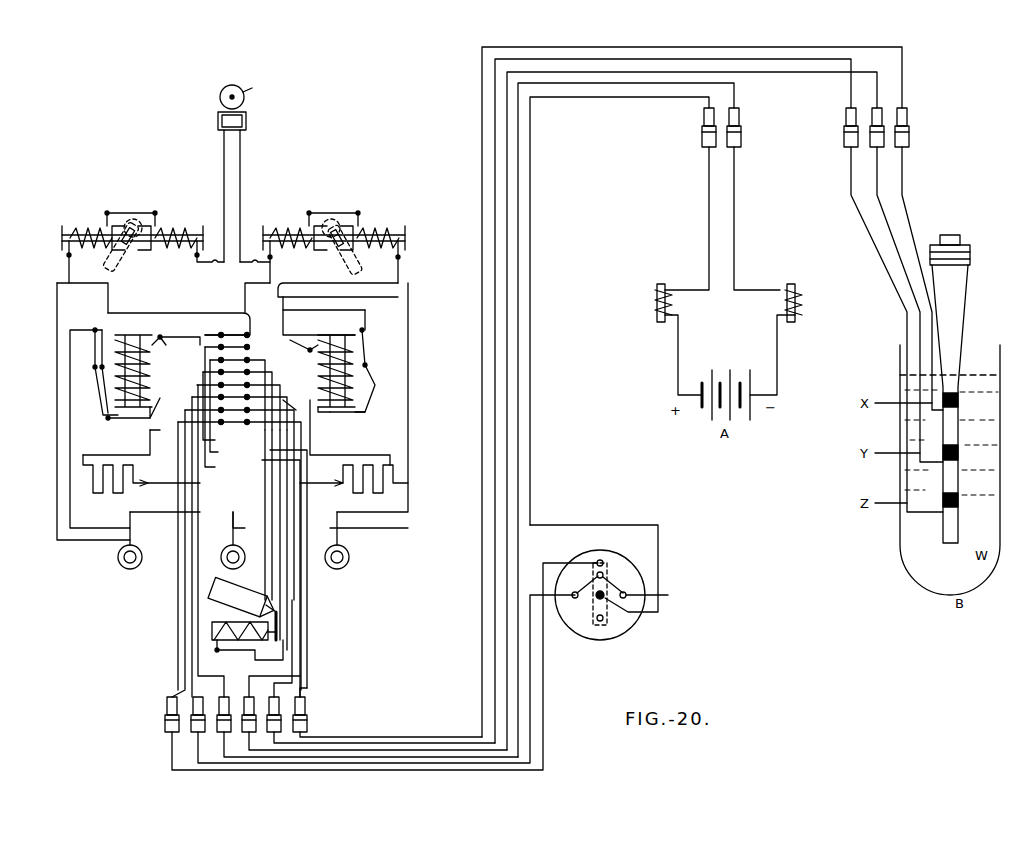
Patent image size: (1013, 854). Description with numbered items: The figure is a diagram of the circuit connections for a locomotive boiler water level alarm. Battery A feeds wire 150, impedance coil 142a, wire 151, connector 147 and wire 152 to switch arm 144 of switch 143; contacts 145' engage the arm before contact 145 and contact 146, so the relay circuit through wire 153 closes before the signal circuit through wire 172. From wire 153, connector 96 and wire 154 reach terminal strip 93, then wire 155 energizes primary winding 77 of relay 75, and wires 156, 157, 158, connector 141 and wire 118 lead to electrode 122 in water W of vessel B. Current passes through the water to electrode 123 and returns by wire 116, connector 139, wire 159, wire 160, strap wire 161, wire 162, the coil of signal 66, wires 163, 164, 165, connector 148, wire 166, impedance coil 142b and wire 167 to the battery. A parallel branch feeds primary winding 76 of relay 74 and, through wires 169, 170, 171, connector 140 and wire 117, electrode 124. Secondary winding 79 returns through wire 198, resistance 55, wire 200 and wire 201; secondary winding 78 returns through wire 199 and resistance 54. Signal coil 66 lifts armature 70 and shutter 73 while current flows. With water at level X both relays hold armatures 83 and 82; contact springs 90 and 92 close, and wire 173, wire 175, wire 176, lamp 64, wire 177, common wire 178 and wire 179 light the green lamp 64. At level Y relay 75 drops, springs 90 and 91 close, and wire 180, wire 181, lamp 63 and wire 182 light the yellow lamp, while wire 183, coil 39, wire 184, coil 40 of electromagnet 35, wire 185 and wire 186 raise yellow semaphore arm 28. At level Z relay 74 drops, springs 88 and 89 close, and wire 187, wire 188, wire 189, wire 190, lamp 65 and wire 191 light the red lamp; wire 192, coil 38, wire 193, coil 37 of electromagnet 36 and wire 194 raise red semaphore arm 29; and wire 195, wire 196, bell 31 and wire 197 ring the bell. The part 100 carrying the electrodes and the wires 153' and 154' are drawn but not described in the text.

The wire 158 is at (695, 52).
The wire 171 is at (851, 60).
The wire 159 is at (822, 73).
The wire 165 is at (736, 99).
The wire 152 is at (640, 98).
The conductor 153' is at (386, 691).
The wire 172 is at (404, 763).
The connector 147 is at (702, 138).
The connector 148 is at (741, 140).
The connector 140 is at (844, 136).
The connector 139 is at (884, 112).
The connector 141 is at (909, 140).
The wire 117 is at (851, 185).
The wire 116 is at (895, 175).
The wire 118 is at (906, 192).
The probe 100 is at (965, 326).
The electrode 122 is at (957, 415).
The electrode 123 is at (957, 465).
The electrode 124 is at (957, 512).
The wire 151 is at (706, 195).
The wire 166 is at (738, 215).
The impedance coil 142a is at (647, 310).
The impedance coil 142b is at (802, 310).
The wire 150 is at (682, 362).
The wire 167 is at (782, 372).
The switch 143 is at (600, 602).
The switch arm 144 is at (594, 598).
The contact 146 is at (604, 560).
The contact 145 is at (615, 580).
The wire 153 is at (578, 583).
The contacts 145' is at (626, 633).
The bell 31 is at (246, 108).
The wire 197 is at (222, 164).
The wire 196 is at (242, 176).
The electromagnet 35 is at (132, 213).
The coil 39 is at (86, 228).
The coil 40 is at (178, 228).
The wire 184 is at (131, 210).
The yellow semaphore arm 28 is at (123, 248).
The wire 183 is at (60, 266).
The wire 185 is at (210, 263).
The electromagnet 36 is at (334, 213).
The coil 37 is at (288, 228).
The coil 38 is at (386, 228).
The wire 193 is at (333, 210).
The red semaphore arm 29 is at (339, 247).
The wire 194 is at (274, 268).
The wire 192 is at (402, 270).
The wire 186 is at (272, 283).
The wire 176 is at (57, 422).
The wire 180 is at (100, 297).
The wire 175 is at (246, 310).
The wire 181 is at (70, 345).
The contact spring 92 is at (94, 360).
The contact spring 90 is at (92, 382).
The contact spring 91 is at (108, 390).
The relay 75 is at (133, 362).
The primary winding 77 is at (157, 336).
The wire 155 is at (180, 352).
The armature 83 is at (114, 425).
The secondary winding 79 is at (144, 417).
The wire 198 is at (104, 458).
The wire 201 is at (150, 444).
The resistance 55 is at (141, 483).
The wire 200 is at (238, 474).
The wire 182 is at (166, 520).
The yellow signal lamp 63 is at (130, 551).
The wire 190 is at (410, 356).
The common signal wire 178 is at (360, 283).
The wire 195 is at (292, 298).
The wire 189 is at (365, 300).
The wire 179 is at (300, 314).
The wire 187 is at (336, 314).
The wire 188 is at (370, 311).
The primary winding 76 is at (303, 337).
The relay 74 is at (336, 364).
The contact spring 89 is at (368, 352).
The contact spring 88 is at (375, 384).
The secondary winding 78 is at (322, 416).
The armature 82 is at (358, 416).
The wire 169 is at (295, 413).
The wire 199 is at (328, 457).
The resistance 54 is at (375, 488).
The wire 191 is at (334, 530).
The red signal lamp 65 is at (345, 561).
The green signal lamp 64 is at (247, 540).
The wire 177 is at (240, 534).
The wire 156 is at (244, 330).
The strap wire 161 is at (218, 391).
The conductor 154' is at (178, 523).
The wire 154 is at (247, 390).
The wire 173 is at (192, 620).
The wire 164 is at (198, 640).
The terminal strip 93 is at (222, 406).
The wire 160 is at (300, 662).
The wire 170 is at (300, 664).
The wire 162 is at (272, 434).
The wire 163 is at (280, 454).
The wire 157 is at (308, 606).
The shutter 73 is at (250, 595).
The armature 70 is at (280, 630).
The signal coil 66 is at (242, 645).
The connector 96 is at (166, 735).